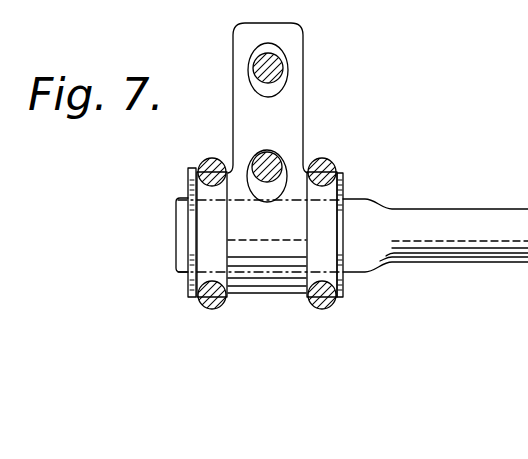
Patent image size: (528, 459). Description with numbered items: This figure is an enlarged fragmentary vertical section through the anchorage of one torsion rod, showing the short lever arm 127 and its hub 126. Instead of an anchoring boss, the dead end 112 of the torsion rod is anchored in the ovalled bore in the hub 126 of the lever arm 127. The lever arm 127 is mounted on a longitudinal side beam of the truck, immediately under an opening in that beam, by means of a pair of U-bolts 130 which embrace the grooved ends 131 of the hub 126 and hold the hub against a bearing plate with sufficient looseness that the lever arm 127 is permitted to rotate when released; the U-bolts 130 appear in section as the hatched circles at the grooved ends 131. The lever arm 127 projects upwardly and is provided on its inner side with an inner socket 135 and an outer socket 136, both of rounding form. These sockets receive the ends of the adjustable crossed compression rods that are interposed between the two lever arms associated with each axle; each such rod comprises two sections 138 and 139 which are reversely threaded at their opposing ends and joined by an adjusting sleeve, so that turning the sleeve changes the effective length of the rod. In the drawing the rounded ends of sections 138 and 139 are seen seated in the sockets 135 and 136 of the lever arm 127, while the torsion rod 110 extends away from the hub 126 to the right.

The shaft 110 is at (513, 197).
The dead end of torsion rod 112 is at (180, 243).
The hub 126 is at (263, 298).
The lever arm 127 is at (303, 93).
The U-bolts 130 is at (200, 164).
The grooved ends 131 is at (212, 215).
The inner socket 135 is at (258, 187).
The outer socket 136 is at (282, 85).
The section of compression rod 138 is at (288, 142).
The section of compression rod 139 is at (265, 85).